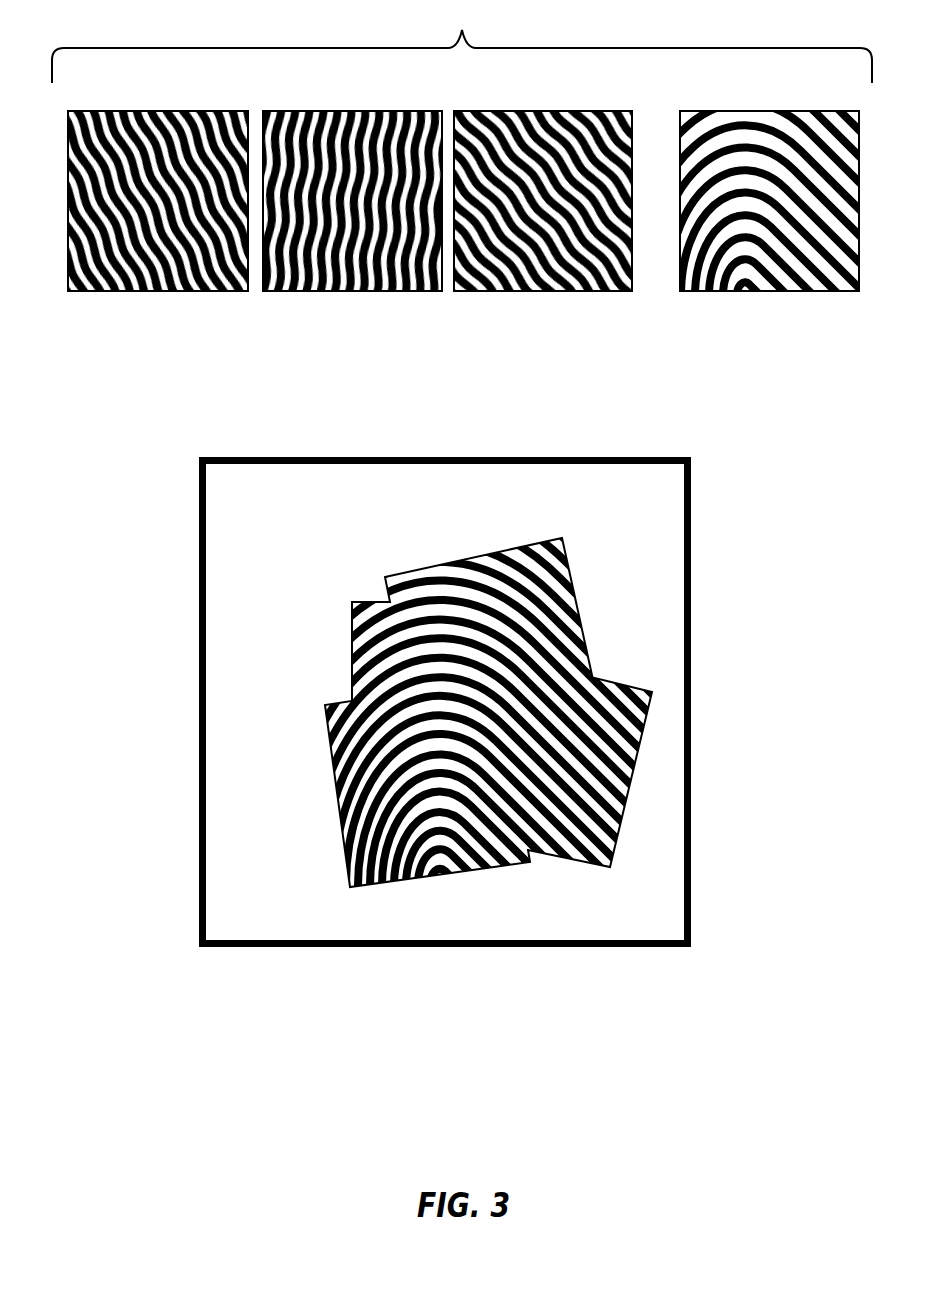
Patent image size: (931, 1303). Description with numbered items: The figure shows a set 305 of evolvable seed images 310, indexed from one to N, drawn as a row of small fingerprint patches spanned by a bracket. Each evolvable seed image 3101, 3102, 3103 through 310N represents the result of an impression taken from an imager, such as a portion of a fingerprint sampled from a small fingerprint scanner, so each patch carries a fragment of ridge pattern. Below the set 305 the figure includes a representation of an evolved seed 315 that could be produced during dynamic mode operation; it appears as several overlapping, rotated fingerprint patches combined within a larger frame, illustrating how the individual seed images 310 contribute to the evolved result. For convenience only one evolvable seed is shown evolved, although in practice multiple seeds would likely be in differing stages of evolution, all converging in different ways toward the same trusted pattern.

The set of evolvable seed images 305 is at (462, 43).
The evolvable seed image 3101 is at (167, 292).
The evolvable seed image 3102 is at (383, 293).
The evolvable seed image 3103 is at (555, 287).
The evolvable seed image 310N is at (777, 287).
The evolvable seed image 310 is at (595, 522).
The evolved seed 315 is at (553, 843).